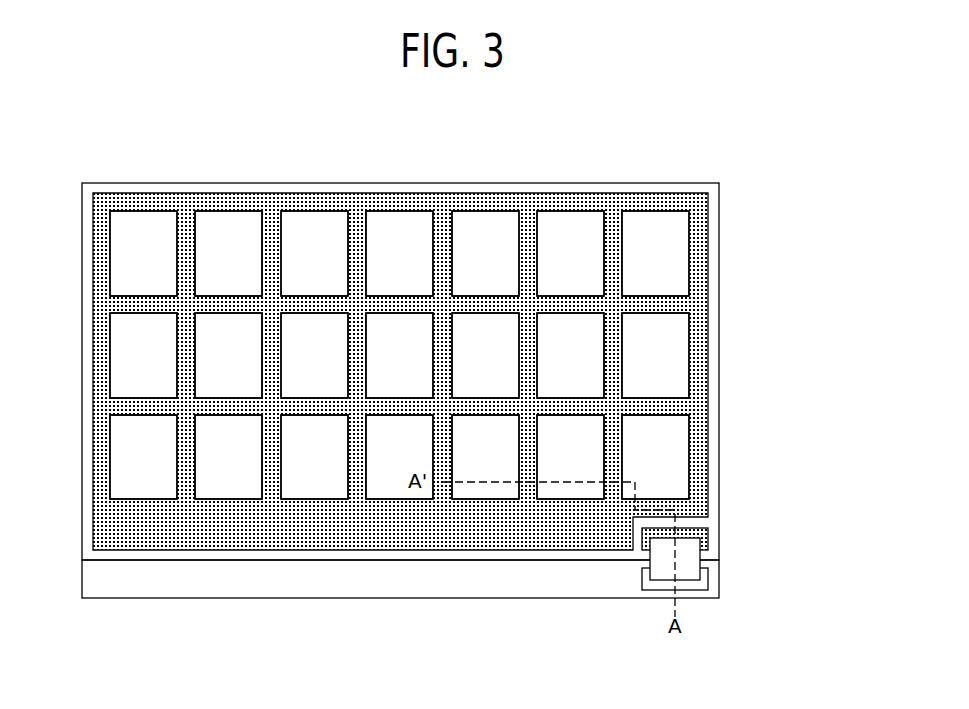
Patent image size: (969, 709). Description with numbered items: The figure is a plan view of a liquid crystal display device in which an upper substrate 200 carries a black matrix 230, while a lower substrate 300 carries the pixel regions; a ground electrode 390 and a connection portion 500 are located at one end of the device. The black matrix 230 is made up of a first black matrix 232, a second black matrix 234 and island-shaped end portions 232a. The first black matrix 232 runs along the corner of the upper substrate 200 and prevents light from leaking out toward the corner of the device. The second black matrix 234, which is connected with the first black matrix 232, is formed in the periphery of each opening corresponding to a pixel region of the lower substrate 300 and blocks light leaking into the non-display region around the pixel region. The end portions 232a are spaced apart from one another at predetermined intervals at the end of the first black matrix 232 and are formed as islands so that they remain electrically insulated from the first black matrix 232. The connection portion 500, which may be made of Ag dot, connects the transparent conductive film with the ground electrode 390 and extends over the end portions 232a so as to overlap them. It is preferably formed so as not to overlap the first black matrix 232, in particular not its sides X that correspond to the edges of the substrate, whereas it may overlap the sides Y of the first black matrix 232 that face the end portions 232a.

The upper substrate 200 is at (272, 561).
The lower substrate 300 is at (168, 598).
The black matrix 230 is at (481, 417).
The first black matrix 232 is at (697, 427).
The second black matrix 234 is at (540, 456).
The end portions 232a is at (710, 537).
The connection portion 500 is at (702, 563).
The ground electrode 390 is at (708, 585).
The sides of the first black matrix corresponding to edges of the first substrate X is at (470, 195).
The sides of the first black matrix facing the end portions Y is at (643, 518).